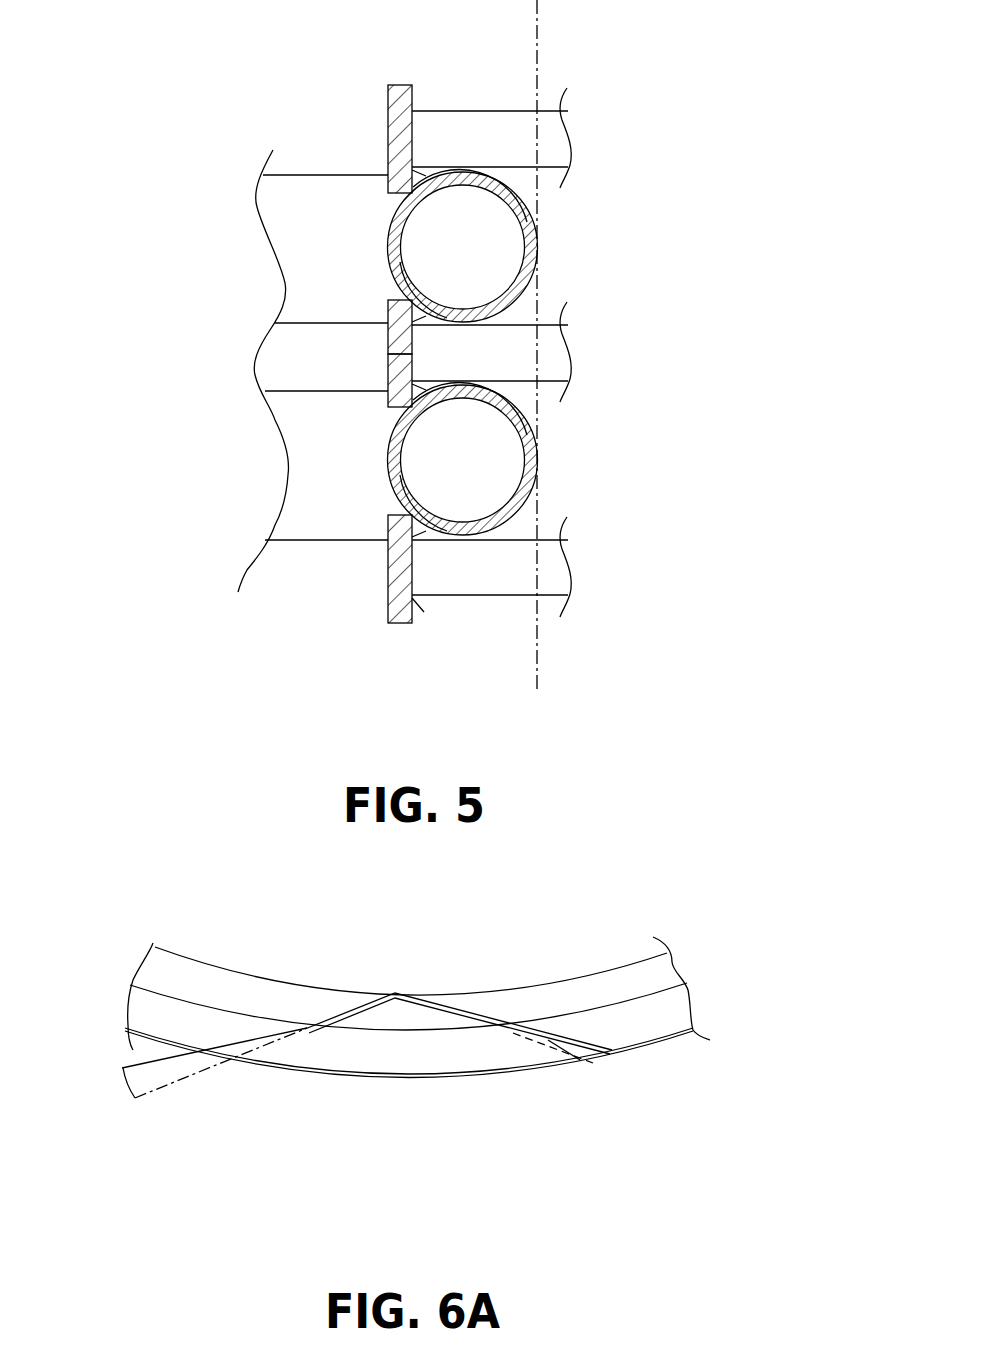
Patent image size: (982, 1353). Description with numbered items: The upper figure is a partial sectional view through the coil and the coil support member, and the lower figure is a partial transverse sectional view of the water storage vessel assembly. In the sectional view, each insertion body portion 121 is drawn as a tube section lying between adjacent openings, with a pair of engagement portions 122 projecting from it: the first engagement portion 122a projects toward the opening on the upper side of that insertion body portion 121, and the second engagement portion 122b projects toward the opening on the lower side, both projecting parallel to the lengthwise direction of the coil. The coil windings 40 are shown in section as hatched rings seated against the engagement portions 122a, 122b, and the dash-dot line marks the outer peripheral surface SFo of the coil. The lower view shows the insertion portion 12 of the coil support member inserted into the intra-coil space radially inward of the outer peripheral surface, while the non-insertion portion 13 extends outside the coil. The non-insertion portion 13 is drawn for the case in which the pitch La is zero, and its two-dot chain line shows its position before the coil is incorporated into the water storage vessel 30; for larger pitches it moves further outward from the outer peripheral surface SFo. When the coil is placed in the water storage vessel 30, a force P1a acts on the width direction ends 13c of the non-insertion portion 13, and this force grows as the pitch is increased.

In FIG. 5, the ring (seal member) 40 is at (392, 236).
In FIG. 6A, the ring (seal member) 40 is at (623, 985).
In FIG. 5, the insertion body portion 121 is at (478, 345).
In FIG. 5, the flange portions 122 is at (224, 354).
In FIG. 5, the first engagement portion 122a is at (390, 302).
In FIG. 5, the second engagement portion 122b is at (388, 402).
In FIG. 5, the outer peripheral surface SFo is at (541, 38).
In FIG. 6A, the pitch La is at (419, 993).
In FIG. 6A, the force P1a is at (181, 1067).
In FIG. 6A, the water storage vessel 30 is at (418, 1076).
In FIG. 6A, the insertion portion 12 is at (463, 1015).
In FIG. 6A, the non-insertion portion 13 is at (558, 1058).
In FIG. 6A, the width direction end 13c is at (600, 1053).